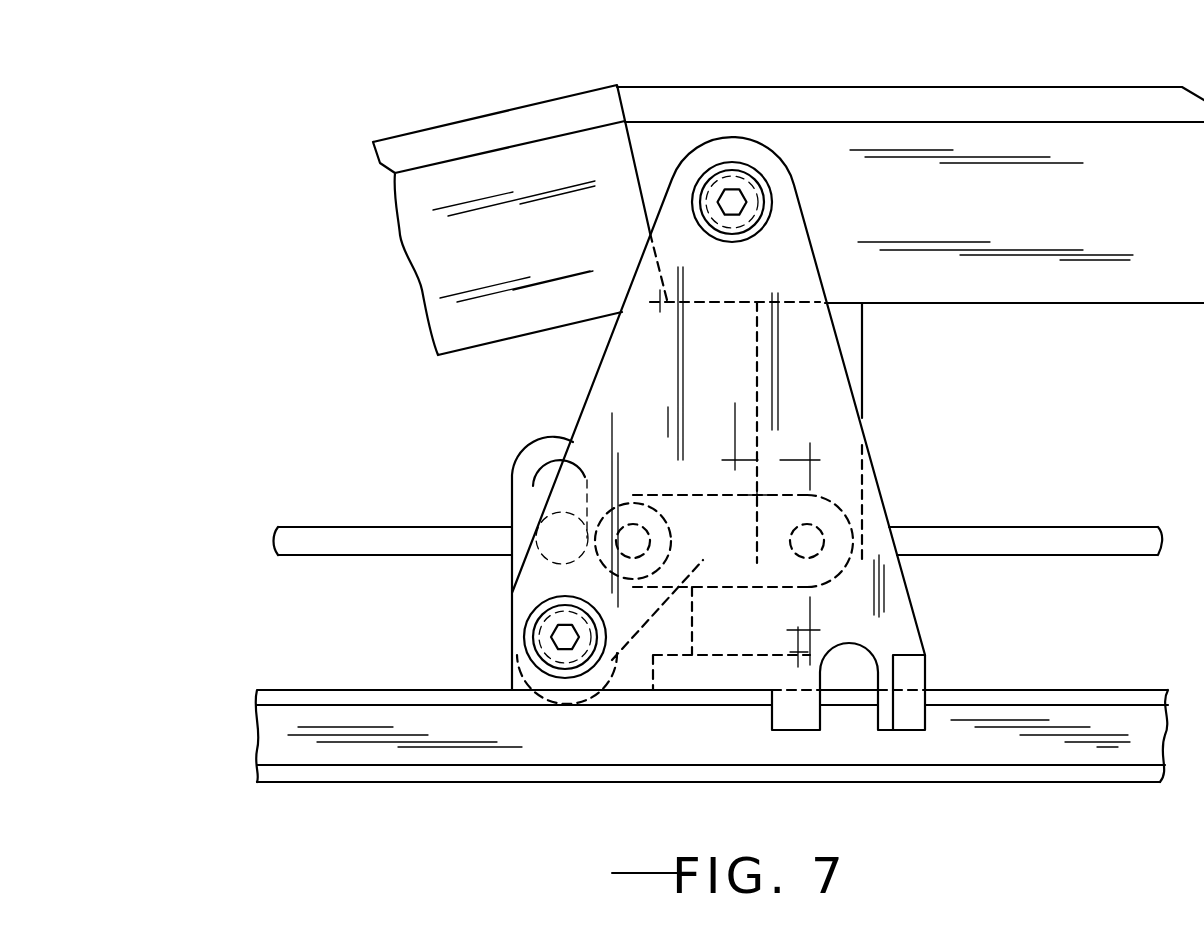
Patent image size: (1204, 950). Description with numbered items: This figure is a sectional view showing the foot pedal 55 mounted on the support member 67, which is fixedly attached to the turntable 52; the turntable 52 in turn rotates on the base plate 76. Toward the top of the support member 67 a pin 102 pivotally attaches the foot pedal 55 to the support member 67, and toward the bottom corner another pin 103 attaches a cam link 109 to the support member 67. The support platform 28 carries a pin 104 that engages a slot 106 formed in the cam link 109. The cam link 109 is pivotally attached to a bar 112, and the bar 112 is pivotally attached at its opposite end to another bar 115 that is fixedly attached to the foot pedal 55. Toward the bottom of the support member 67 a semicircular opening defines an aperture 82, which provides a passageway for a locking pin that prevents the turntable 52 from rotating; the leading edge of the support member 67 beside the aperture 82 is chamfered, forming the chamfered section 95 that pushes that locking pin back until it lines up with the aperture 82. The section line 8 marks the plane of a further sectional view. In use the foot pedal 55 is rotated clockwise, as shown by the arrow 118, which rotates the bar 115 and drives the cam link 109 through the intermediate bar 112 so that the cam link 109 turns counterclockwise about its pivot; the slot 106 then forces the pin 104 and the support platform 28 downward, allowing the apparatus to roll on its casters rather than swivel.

The arrow 118 is at (452, 90).
The foot pedal 55 is at (1003, 147).
The section line 8- 8 is at (688, 65).
The support member 67 is at (828, 402).
The bar 115 is at (850, 337).
The bar 112 is at (683, 668).
The pin 102 is at (742, 200).
The pin 103 is at (548, 633).
The cam link 109 is at (555, 443).
The slot 106 is at (542, 477).
The pin 104 is at (557, 532).
The support platform 28 is at (1015, 527).
The turntable 52 is at (395, 692).
The base plate 76 is at (378, 782).
The aperture 82 is at (866, 661).
The chamfered section 95 is at (907, 722).